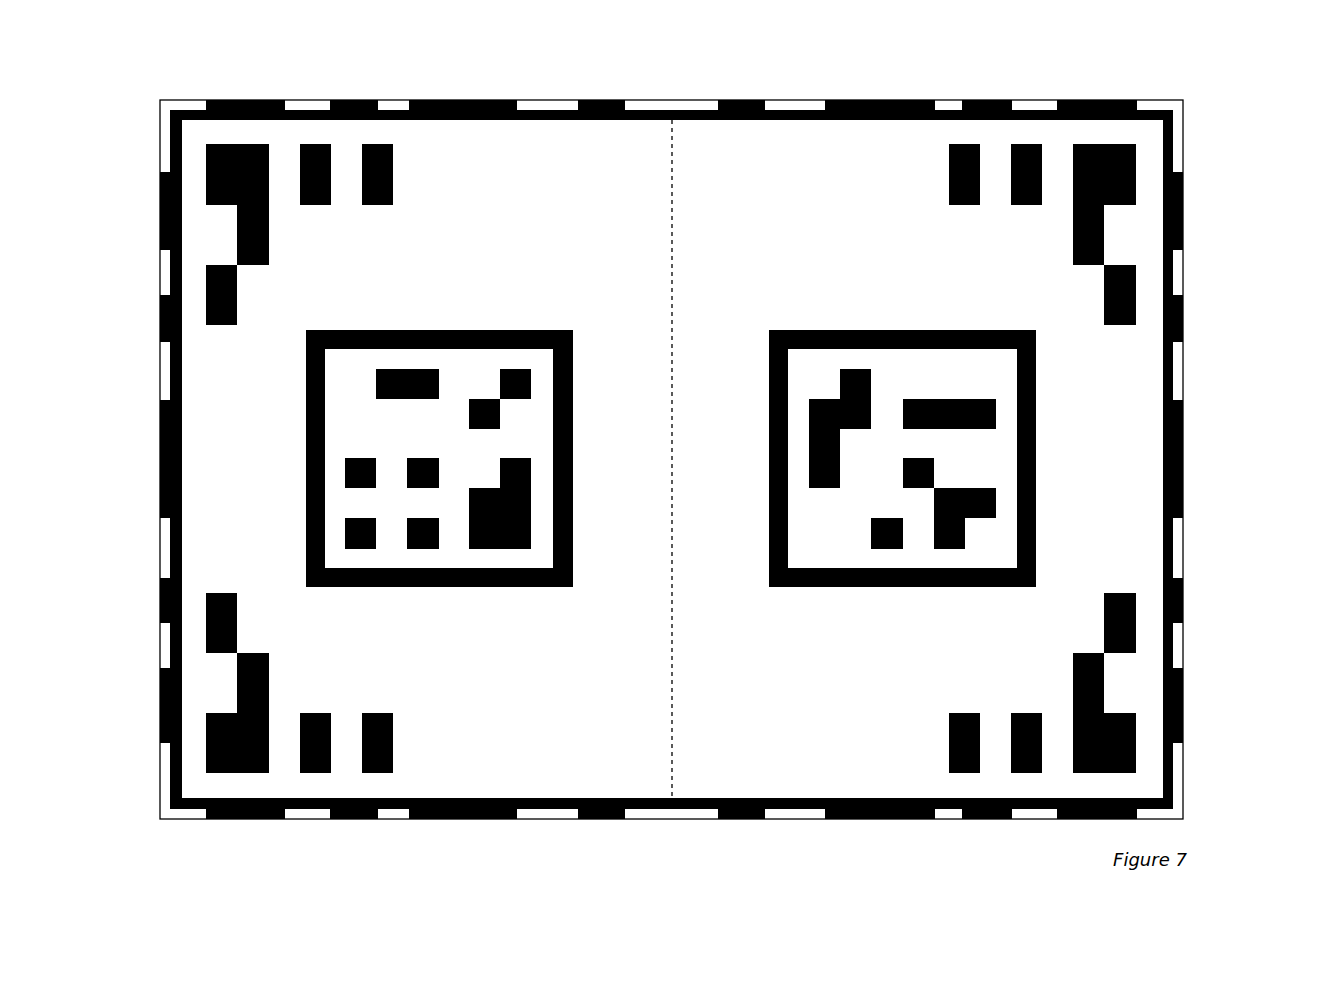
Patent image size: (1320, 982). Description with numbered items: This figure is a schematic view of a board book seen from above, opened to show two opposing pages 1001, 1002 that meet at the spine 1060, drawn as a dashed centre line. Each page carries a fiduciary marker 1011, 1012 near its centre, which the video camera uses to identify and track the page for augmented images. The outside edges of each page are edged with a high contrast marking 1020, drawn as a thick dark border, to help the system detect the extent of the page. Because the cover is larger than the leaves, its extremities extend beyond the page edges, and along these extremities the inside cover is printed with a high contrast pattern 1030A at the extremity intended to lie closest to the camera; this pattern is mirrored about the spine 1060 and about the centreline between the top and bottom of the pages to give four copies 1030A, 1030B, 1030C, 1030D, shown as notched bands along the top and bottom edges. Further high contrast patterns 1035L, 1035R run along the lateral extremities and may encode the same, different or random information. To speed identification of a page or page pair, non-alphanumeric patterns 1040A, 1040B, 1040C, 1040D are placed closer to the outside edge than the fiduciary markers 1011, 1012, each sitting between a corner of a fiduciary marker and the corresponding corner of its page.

The page 1001 is at (517, 158).
The page 1002 is at (812, 158).
The fiduciary marker 1011 is at (299, 414).
The fiduciary marker 1012 is at (1042, 414).
The high contrast marking 1020 is at (797, 812).
The high contrast pattern 1030A is at (438, 98).
The high contrast pattern 1030B is at (1076, 98).
The high contrast pattern 1030C is at (435, 823).
The high contrast pattern 1030D is at (903, 827).
The high contrast pattern 1035L is at (160, 596).
The high contrast pattern 1035R is at (1183, 596).
The non-alphanumeric pattern 1040A is at (1137, 160).
The non-alphanumeric pattern 1040B is at (205, 160).
The non-alphanumeric pattern 1040C is at (205, 743).
The non-alphanumeric pattern 1040D is at (1138, 757).
The spine 1060 is at (672, 746).